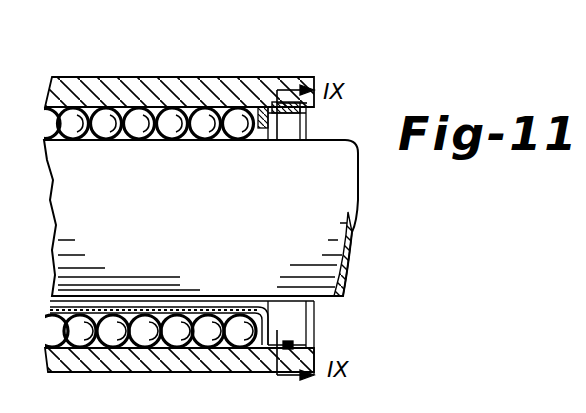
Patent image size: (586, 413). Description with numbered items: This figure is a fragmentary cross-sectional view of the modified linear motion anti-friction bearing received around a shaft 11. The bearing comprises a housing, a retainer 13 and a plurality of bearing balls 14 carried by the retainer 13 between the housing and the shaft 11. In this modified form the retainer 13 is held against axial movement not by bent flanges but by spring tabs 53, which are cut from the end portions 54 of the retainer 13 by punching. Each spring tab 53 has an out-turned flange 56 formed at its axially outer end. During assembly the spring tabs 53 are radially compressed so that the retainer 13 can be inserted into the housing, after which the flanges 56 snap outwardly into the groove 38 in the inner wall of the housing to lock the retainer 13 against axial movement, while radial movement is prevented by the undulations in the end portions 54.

The shaft 11 is at (60, 257).
The retainer 13 is at (238, 308).
The bearing balls 14 is at (227, 142).
The grooves 38 is at (298, 357).
The spring tabs 53 is at (283, 114).
The end portions 54 is at (304, 116).
The out-turned flanges 56 is at (307, 103).